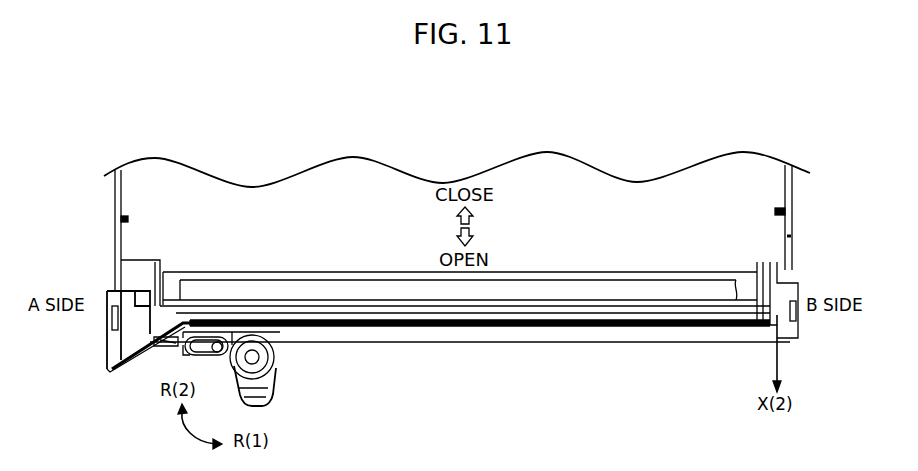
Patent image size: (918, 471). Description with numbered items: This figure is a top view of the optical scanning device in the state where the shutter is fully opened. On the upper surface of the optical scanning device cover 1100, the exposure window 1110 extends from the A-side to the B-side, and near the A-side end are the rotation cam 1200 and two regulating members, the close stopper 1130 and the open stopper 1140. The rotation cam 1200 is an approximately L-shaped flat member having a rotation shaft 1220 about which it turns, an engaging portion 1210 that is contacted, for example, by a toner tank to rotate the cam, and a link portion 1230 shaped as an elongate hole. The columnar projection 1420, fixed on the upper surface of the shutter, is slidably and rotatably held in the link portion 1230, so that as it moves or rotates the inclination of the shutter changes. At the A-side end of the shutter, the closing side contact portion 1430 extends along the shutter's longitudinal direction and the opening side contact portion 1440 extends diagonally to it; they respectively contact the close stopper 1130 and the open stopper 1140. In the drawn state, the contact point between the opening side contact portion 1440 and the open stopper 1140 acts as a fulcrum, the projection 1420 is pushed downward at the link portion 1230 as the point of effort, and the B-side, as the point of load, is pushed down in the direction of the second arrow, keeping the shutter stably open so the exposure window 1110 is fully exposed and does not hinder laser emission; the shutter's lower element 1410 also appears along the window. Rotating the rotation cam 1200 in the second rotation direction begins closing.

The optical scanning device cover 1100 is at (405, 183).
The exposure window 1110 is at (503, 296).
The close stopper 1130 is at (136, 264).
The open stopper 1140 is at (176, 346).
The rotation cam 1200 is at (265, 401).
The engaging portion 1210 is at (268, 407).
The rotation shaft 1220 is at (257, 358).
The link portion 1230 is at (198, 346).
The lower frame 1410 is at (490, 334).
The projection 1420 is at (216, 342).
The closing side contact portion 1430 is at (118, 289).
The opening side contact portion 1440 is at (160, 345).